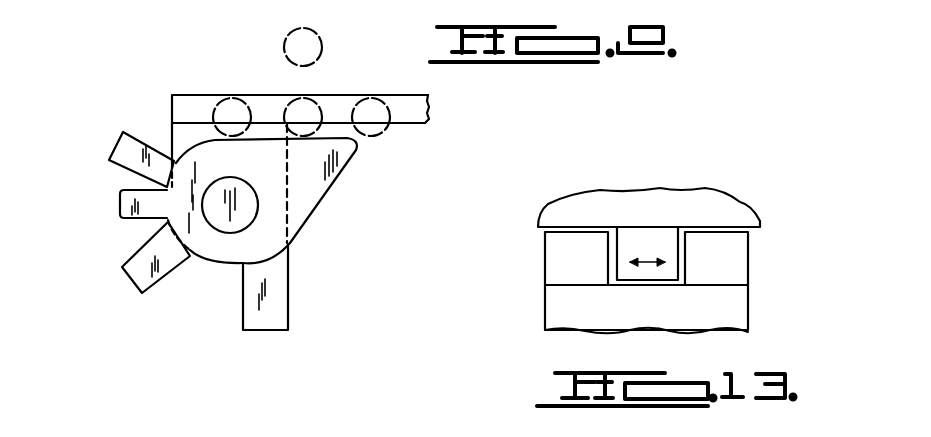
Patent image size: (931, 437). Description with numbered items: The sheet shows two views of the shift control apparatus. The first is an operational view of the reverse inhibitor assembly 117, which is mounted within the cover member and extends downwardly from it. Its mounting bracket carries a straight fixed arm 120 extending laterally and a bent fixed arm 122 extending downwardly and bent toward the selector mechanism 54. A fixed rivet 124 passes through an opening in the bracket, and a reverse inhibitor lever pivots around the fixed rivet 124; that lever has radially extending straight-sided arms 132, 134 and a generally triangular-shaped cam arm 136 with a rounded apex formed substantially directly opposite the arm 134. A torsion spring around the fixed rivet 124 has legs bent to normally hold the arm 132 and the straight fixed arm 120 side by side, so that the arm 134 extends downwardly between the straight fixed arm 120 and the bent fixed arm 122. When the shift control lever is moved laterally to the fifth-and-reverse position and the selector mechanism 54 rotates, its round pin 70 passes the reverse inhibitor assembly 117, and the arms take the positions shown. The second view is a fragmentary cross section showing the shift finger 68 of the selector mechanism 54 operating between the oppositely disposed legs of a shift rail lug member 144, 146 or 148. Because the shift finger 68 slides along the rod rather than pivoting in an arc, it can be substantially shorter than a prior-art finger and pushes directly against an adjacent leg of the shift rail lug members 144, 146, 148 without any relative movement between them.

In FIG. 9, the round pin 70 is at (213, 100).
In FIG. 9, the reverse inhibitor assembly 117 is at (356, 204).
In FIG. 9, the straight fixed arm 120 is at (128, 207).
In FIG. 9, the bent fixed arm 122 is at (278, 322).
In FIG. 9, the fixed rivet 124 is at (245, 217).
In FIG. 9, the arm 132 is at (123, 145).
In FIG. 9, the arm 134 is at (137, 277).
In FIG. 9, the cam arm 136 is at (353, 158).
In FIG. 13, the selector mechanism 54 is at (682, 198).
In FIG. 13, the shift finger 68 is at (650, 272).
In FIG. 13, the shift rail lug member 144 is at (735, 260).
In FIG. 13, the shift rail lug member 146 is at (772, 258).
In FIG. 13, the shift rail lug member 148 is at (682, 303).